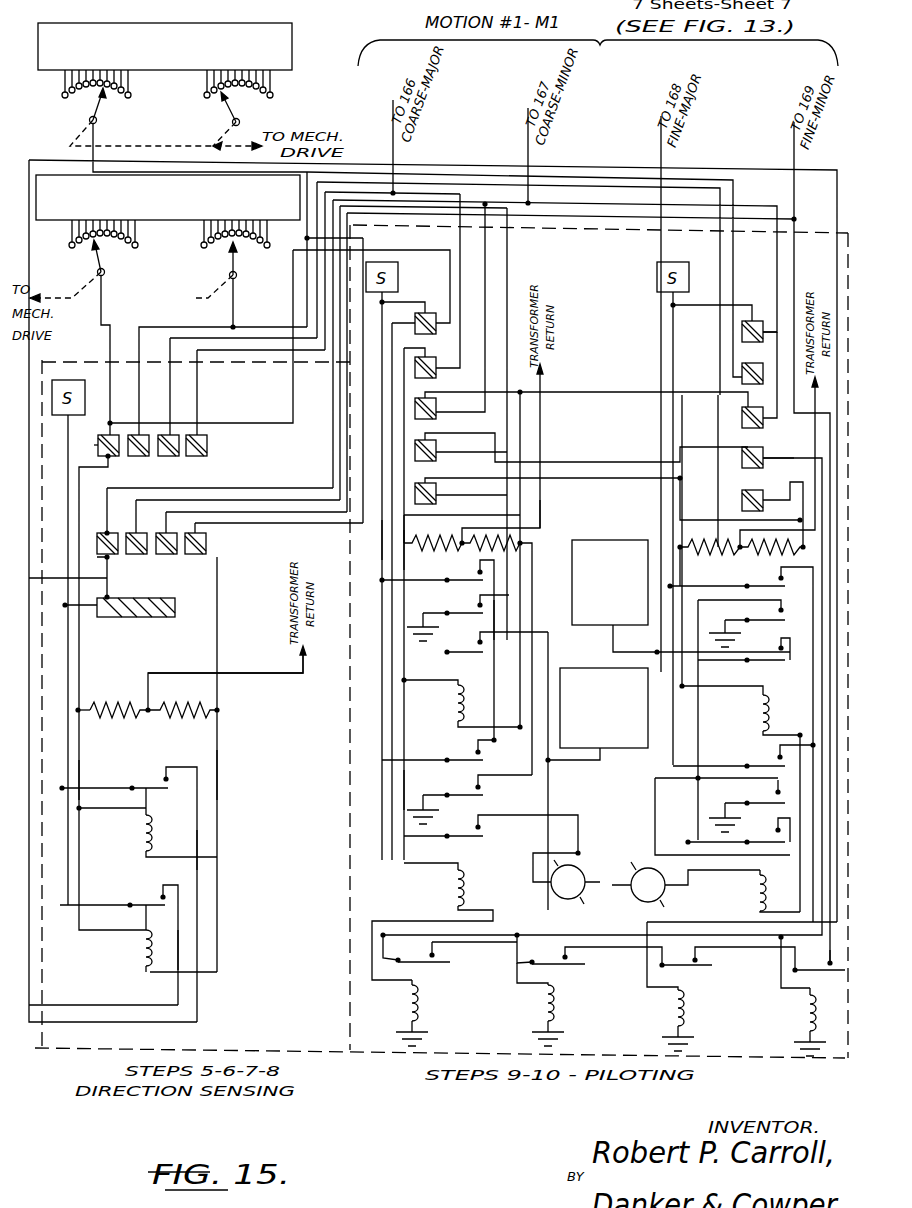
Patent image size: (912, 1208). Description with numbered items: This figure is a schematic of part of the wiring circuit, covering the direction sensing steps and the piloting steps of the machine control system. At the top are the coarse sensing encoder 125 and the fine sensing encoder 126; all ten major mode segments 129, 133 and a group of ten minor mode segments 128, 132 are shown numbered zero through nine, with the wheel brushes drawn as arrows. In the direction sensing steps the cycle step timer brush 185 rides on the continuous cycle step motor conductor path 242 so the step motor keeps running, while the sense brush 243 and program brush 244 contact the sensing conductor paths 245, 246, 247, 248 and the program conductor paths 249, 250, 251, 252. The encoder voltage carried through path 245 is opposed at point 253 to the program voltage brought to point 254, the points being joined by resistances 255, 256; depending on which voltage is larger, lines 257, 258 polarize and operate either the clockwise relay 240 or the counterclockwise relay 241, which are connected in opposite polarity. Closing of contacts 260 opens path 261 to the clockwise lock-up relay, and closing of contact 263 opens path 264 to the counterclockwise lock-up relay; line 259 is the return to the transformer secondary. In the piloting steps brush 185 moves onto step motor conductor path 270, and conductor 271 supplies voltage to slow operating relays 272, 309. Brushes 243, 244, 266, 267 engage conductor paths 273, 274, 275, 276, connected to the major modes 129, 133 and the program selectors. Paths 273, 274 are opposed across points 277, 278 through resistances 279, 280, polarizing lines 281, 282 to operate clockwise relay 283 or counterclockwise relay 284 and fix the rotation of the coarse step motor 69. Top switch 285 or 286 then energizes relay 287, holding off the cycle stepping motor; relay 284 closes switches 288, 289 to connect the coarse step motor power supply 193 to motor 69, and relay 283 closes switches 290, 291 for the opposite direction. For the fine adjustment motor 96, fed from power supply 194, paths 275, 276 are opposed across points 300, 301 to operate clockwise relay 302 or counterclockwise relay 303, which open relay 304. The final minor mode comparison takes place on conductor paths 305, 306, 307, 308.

The coarse step motor 69 is at (582, 870).
The fine adjustment motor 96 is at (640, 902).
The coarse sensing encoder 125 is at (146, 222).
The fine sensing encoder 126 is at (141, 72).
The coarse minor mode conductive segments 128 is at (262, 258).
The coarse major mode conductive segments 129 is at (133, 252).
The fine minor mode conductive segments 132 is at (268, 95).
The fine major mode conductive segments 133 is at (127, 104).
The cycle step timer brush 185 is at (110, 597).
The coarse step motor power supply 193 is at (596, 668).
The fine step motor power supply 194 is at (590, 540).
The clockwise relay 240 is at (144, 950).
The counterclockwise relay 241 is at (144, 828).
The cycle step motor conductor path 242 is at (172, 617).
The sense brush 243 is at (100, 462).
The program brush 244 is at (105, 562).
The sensing conductor path 245 is at (112, 458).
The sensing conductor path 246 is at (142, 458).
The sensing conductor path 247 is at (172, 458).
The sensing conductor path 248 is at (208, 448).
The program conductor path 249 is at (97, 540).
The program conductor path 250 is at (140, 556).
The program conductor path 251 is at (170, 556).
The program conductor path 252 is at (206, 547).
The sensing opposition point 253 is at (80, 708).
The program opposition point 254 is at (218, 708).
The resistance 255 is at (119, 723).
The resistance 256 is at (181, 723).
The polarized line 257 is at (77, 786).
The polarized line 258 is at (218, 782).
The transformer return line 259 is at (270, 678).
The clockwise relay contacts 260 is at (150, 900).
The clockwise lock-up path 261 is at (180, 952).
The counterclockwise relay contact 263 is at (168, 788).
The counterclockwise lock-up path 264 is at (199, 846).
The cycle step timer brush 266 is at (425, 440).
The cycle step timer brush 267 is at (425, 483).
The step motor conductor path 270 is at (430, 312).
The conductor 271 is at (384, 535).
The slow operating relay 272 is at (555, 1002).
The conductor path 273 is at (437, 366).
The conductor path 274 is at (437, 412).
The conductor path 275 is at (437, 456).
The conductor path 276 is at (437, 500).
The opposition point 277 is at (402, 548).
The opposition point 278 is at (556, 528).
The resistance 279 is at (458, 548).
The resistance 280 is at (512, 552).
The polarized line 281 is at (400, 780).
The polarized line 282 is at (512, 610).
The clockwise relay 283 is at (452, 888).
The counterclockwise relay 284 is at (456, 702).
The top switch 285 is at (450, 596).
The top switch 286 is at (454, 758).
The relay 287 is at (418, 1000).
The switch 288 is at (510, 614).
The switch 289 is at (452, 652).
The switch 290 is at (454, 793).
The switch 291 is at (450, 838).
The opposition point 300 is at (680, 550).
The opposition point 301 is at (800, 550).
The clockwise relay 302 is at (758, 890).
The counterclockwise relay 303 is at (760, 706).
The relay 304 is at (684, 1000).
The conductor path 305 is at (742, 378).
The conductor path 306 is at (742, 422).
The conductor path 307 is at (752, 466).
The conductor path 308 is at (742, 504).
The slow operating relay 309 is at (808, 1002).